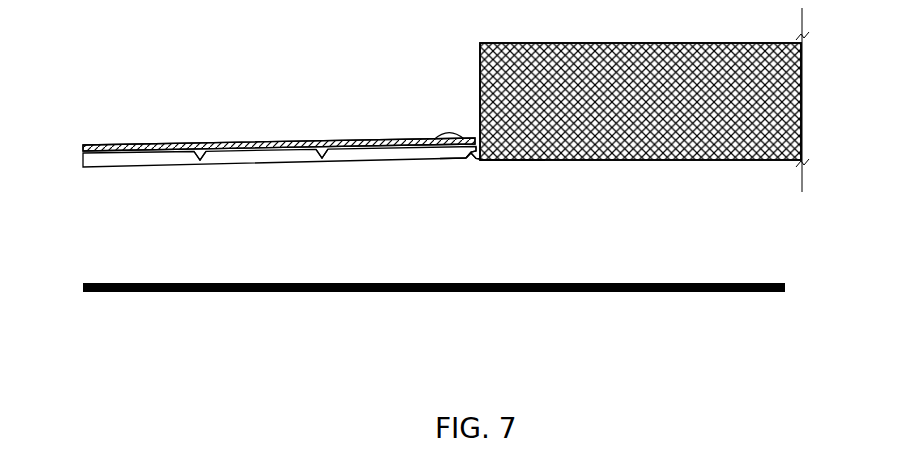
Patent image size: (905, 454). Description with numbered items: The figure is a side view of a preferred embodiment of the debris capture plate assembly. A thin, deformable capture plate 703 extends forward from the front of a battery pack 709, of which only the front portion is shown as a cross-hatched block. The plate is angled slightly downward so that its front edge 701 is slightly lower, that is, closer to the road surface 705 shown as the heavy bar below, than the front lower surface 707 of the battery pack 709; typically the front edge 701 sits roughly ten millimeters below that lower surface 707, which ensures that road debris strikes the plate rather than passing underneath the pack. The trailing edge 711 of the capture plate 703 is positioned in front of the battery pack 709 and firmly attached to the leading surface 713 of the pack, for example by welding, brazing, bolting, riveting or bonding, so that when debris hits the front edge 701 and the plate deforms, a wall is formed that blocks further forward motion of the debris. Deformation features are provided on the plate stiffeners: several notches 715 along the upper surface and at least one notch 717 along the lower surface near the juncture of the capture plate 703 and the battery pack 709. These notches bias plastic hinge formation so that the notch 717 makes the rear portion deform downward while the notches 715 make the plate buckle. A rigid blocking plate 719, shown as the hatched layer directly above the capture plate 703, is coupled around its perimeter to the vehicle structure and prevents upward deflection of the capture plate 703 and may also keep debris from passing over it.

The front edge 701 is at (259, 160).
The capture plate 703 is at (249, 172).
The road surface 705 is at (568, 276).
The front lower surface 707 is at (530, 163).
The battery pack 709 is at (707, 109).
The trailing edge 711 is at (441, 141).
The leading surface 713 is at (483, 164).
The notches 715 is at (201, 146).
The notch 717 is at (469, 164).
The blocking plate 719 is at (130, 146).